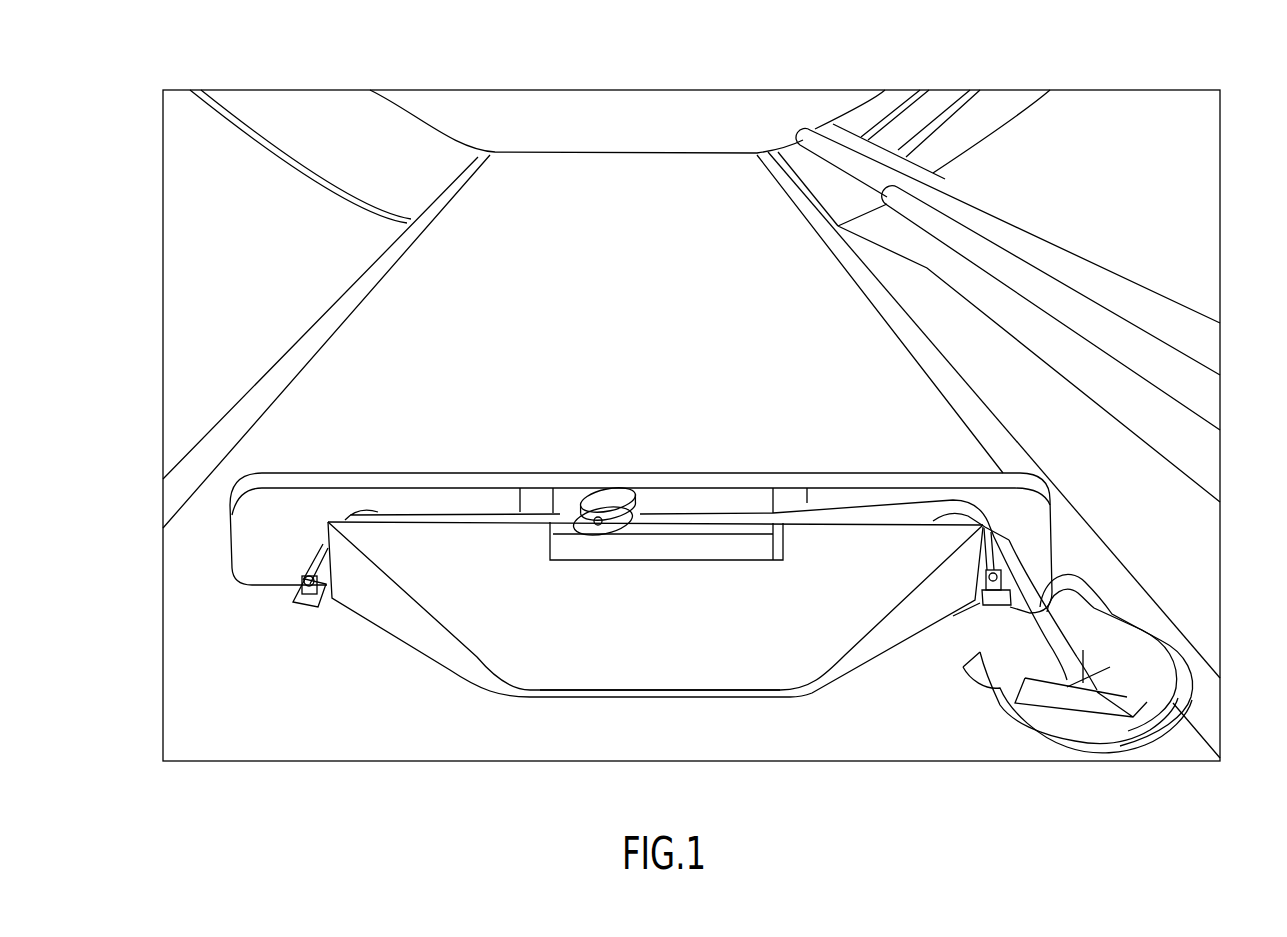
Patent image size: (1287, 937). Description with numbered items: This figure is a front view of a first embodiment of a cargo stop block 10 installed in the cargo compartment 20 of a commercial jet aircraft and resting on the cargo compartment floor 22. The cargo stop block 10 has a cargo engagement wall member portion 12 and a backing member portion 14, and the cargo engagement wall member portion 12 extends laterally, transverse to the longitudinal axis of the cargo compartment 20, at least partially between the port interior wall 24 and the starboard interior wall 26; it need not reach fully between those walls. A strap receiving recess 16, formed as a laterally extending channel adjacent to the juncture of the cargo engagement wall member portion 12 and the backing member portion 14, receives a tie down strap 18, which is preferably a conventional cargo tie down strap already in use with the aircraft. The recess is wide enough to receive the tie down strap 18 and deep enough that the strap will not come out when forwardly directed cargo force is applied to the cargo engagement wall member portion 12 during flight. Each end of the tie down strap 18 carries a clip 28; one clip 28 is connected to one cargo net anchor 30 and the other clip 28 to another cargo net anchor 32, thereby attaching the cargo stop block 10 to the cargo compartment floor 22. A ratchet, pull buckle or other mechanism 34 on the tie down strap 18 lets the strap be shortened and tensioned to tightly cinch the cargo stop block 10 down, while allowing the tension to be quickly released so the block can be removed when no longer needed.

The cargo stop block 10 is at (1128, 492).
The cargo engagement wall member portion 12 is at (990, 481).
The backing member portion 14 is at (753, 662).
The strap receiving recess 16 is at (360, 512).
The tie down strap 18 is at (708, 518).
The cargo compartment 20 is at (1170, 253).
The cargo compartment floor 22 is at (665, 739).
The port interior wall 24 is at (1087, 190).
The starboard interior wall 26 is at (272, 250).
The clip 28 is at (303, 574).
The cargo net anchor 30 is at (296, 594).
The cargo net anchor 32 is at (1073, 657).
The ratchet, pull buckle or other mechanism 34 is at (607, 498).